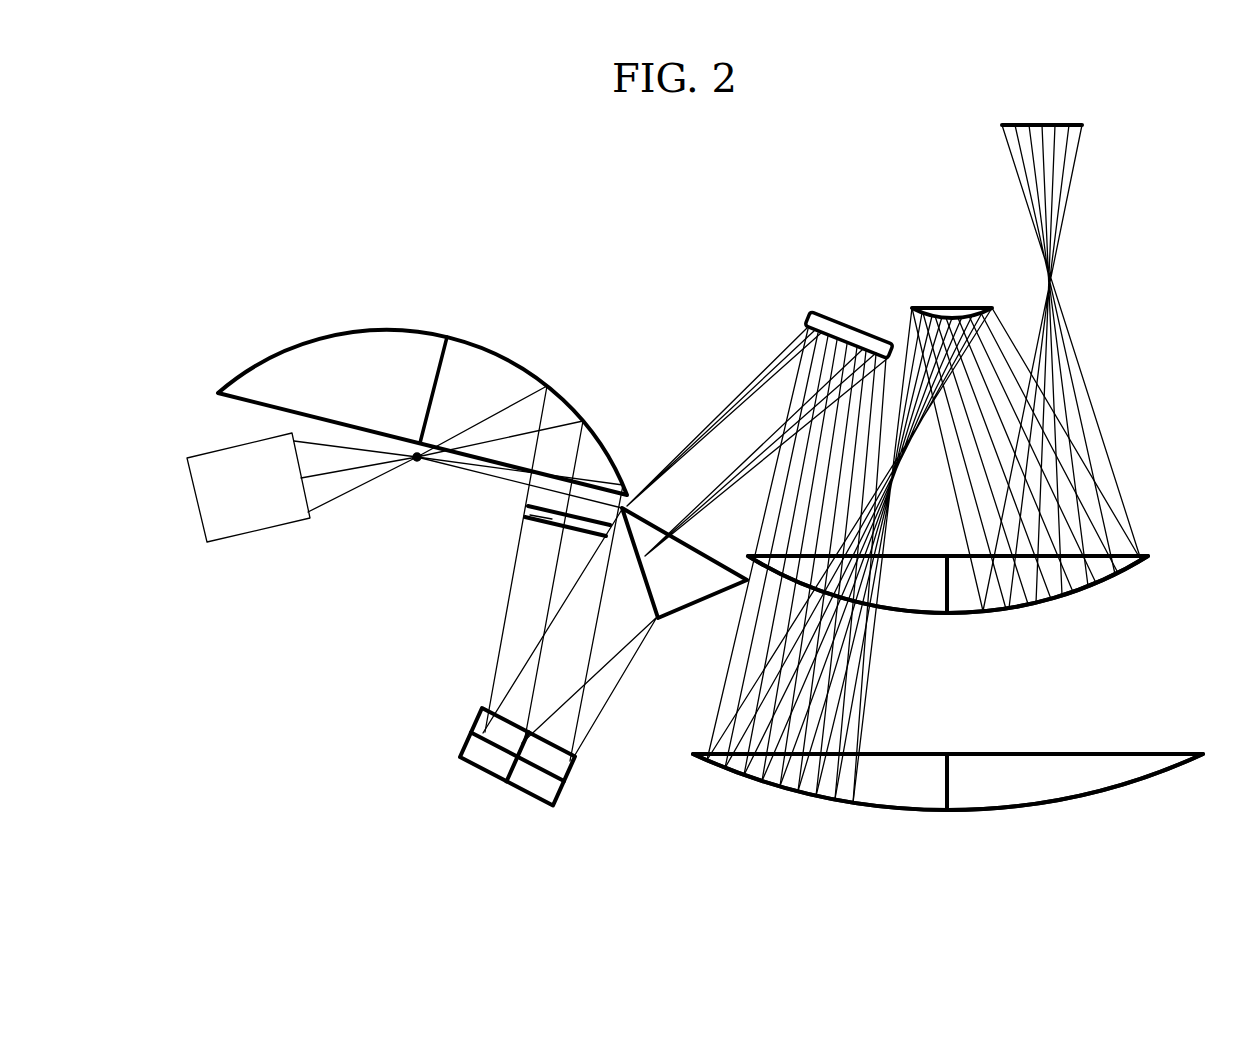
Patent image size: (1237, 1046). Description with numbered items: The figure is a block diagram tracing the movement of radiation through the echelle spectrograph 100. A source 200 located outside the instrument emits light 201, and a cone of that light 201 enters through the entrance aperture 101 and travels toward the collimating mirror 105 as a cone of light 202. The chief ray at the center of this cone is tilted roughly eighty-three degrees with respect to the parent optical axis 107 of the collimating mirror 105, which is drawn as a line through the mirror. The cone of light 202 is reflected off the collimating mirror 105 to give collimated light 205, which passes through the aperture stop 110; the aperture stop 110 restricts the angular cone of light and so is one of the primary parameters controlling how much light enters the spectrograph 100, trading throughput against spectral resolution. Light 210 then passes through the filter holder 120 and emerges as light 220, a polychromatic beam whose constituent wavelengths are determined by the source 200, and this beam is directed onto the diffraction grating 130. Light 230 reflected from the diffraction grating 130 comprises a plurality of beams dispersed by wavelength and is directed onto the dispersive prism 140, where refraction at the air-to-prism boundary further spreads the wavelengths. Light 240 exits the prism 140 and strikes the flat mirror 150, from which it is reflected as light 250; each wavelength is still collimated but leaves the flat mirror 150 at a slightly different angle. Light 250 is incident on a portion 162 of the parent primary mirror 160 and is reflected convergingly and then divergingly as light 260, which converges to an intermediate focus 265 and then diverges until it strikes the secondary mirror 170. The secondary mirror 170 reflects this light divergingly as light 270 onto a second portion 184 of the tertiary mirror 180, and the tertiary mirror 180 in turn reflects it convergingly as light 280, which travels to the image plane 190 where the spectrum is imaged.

The echelle spectrograph 100 is at (670, 835).
The entrance aperture 101 is at (420, 466).
The collimating mirror 105 is at (364, 330).
The parent optical axis 107 is at (430, 382).
The aperture stop 110 is at (528, 508).
The filter holder 120 is at (533, 532).
The diffraction grating 130 is at (452, 718).
The prism 140 is at (690, 573).
The flat mirror 150 is at (846, 310).
The primary mirror 160 is at (942, 734).
The portion 162 is at (800, 797).
The secondary mirror 170 is at (957, 293).
The tertiary mirror 180 is at (1001, 636).
The second portion 184 is at (1057, 603).
The image plane 190 is at (1063, 116).
The source 200 is at (263, 499).
The light 201 is at (357, 467).
The cone of light 202 is at (500, 430).
The collimated light 205 is at (571, 453).
The light 210 is at (540, 516).
The light 220 is at (557, 585).
The light 230 is at (610, 697).
The light 240 is at (732, 467).
The light 250 is at (823, 477).
The light 260 is at (837, 660).
The intermediate focus 265 is at (940, 471).
The light 270 is at (993, 480).
The light 280 is at (1110, 432).